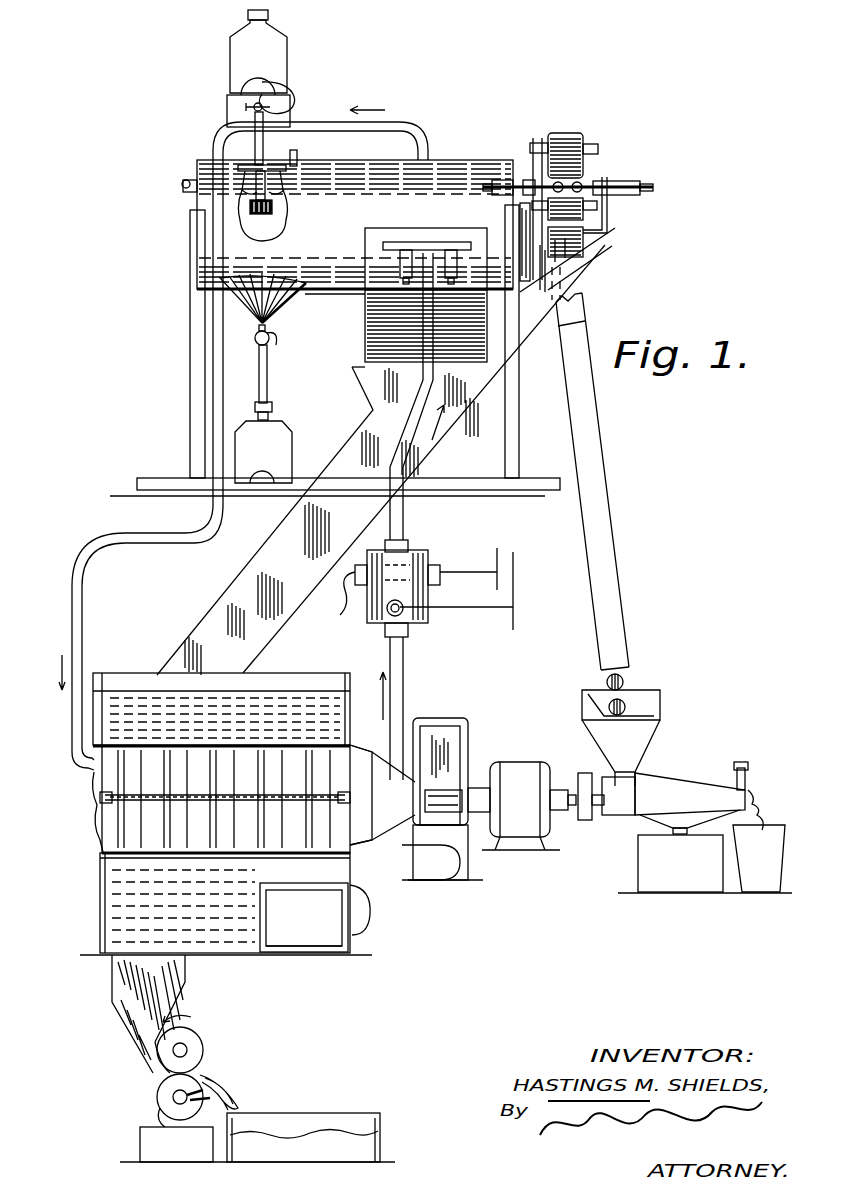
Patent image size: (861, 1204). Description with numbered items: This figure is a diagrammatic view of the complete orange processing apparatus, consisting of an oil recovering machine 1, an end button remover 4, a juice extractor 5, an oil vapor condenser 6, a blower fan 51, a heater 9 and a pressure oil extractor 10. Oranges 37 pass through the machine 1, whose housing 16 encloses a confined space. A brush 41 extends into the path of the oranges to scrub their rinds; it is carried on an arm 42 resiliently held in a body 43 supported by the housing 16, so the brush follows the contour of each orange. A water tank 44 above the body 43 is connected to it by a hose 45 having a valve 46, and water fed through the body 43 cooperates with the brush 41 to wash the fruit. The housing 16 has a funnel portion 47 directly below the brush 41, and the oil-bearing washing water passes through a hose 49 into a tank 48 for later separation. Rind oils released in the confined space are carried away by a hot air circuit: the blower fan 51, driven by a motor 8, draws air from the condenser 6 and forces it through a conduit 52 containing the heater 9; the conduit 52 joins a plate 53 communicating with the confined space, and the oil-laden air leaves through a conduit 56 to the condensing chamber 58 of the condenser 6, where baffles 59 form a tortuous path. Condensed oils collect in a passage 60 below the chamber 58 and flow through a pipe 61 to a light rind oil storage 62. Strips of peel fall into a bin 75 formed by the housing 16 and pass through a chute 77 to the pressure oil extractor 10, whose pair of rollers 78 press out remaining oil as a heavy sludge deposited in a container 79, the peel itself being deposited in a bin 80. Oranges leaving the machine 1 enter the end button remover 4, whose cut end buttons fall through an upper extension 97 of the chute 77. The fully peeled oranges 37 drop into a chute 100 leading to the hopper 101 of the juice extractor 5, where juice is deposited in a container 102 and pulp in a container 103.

The oil recovering machine 1 is at (464, 158).
The end button remover 4 is at (617, 172).
The juice extractor 5 is at (698, 785).
The oil vapor condenser 6 is at (159, 680).
The motor 8 is at (505, 766).
The heater 9 is at (418, 565).
The pressure oil extractor 10 is at (215, 1086).
The housing 16 is at (359, 221).
The oranges 37 is at (622, 705).
The brush 41 is at (258, 207).
The arm 42 is at (260, 190).
The body 43 is at (264, 165).
The water tank 44 is at (272, 58).
The hose 45 is at (258, 140).
The valve 46 is at (250, 98).
The funnel portion 47 is at (296, 308).
The tank 48 is at (287, 435).
The hose 49 is at (268, 378).
The blower fan 51 is at (440, 745).
The conduit 52 is at (403, 690).
The plate 53 is at (420, 243).
The conduit 56 is at (413, 134).
The condensing chamber 58 is at (270, 760).
The baffles 59 is at (100, 772).
The passage 60 is at (105, 870).
The pipe 61 is at (357, 902).
The light rind oil storage 62 is at (332, 938).
The bin 75 is at (372, 330).
The chute 77 is at (254, 553).
The rollers 78 is at (186, 1046).
The container 79 is at (150, 1128).
The bin 80 is at (312, 1122).
The upper extension 97 is at (598, 243).
The chute 100 is at (575, 345).
The hopper 101 is at (655, 712).
The container 102 is at (638, 860).
The container 103 is at (757, 835).